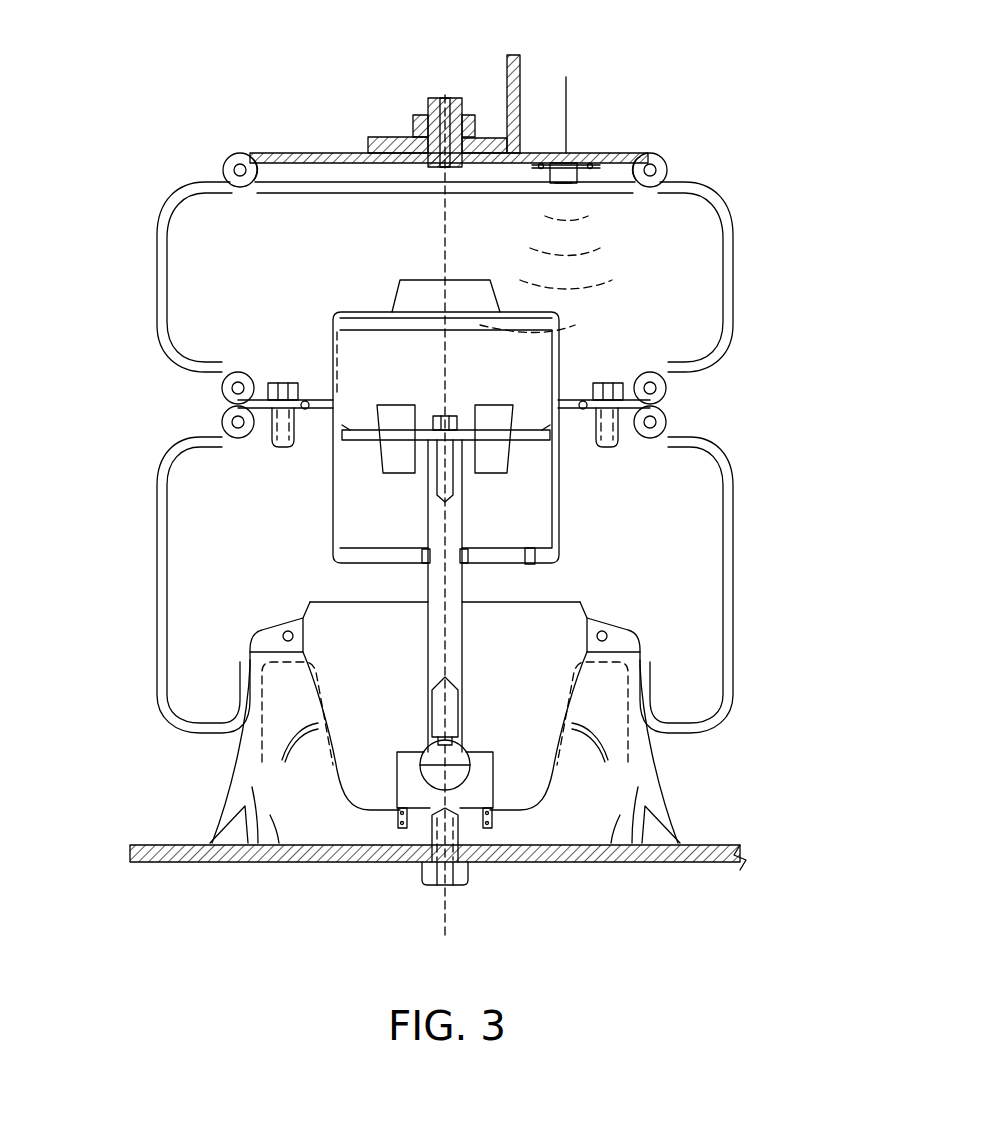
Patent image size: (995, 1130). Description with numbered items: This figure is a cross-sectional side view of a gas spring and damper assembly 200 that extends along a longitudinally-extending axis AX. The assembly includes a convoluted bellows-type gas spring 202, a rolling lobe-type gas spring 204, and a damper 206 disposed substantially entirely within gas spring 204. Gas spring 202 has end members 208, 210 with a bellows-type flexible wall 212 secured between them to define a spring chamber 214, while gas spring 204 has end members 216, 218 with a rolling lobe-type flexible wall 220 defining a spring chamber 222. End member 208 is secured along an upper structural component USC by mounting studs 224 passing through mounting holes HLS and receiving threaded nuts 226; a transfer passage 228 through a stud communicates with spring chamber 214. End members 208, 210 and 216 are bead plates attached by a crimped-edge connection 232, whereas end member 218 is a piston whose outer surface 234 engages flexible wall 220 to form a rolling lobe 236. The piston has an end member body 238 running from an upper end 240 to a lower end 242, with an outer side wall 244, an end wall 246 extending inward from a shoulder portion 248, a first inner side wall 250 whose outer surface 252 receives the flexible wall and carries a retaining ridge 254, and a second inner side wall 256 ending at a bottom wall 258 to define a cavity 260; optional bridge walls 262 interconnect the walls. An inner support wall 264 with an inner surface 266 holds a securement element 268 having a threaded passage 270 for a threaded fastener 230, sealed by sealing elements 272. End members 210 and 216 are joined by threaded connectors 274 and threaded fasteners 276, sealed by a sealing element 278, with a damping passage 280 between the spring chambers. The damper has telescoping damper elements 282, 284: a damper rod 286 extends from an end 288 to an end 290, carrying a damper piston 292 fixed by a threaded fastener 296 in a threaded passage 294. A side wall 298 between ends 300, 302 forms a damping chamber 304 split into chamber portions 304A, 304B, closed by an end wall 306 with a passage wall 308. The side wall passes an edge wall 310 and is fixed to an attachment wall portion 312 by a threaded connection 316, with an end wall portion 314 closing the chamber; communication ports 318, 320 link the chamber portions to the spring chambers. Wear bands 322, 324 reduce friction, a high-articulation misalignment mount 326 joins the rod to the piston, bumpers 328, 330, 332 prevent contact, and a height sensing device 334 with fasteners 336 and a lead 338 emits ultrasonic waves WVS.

The gas spring and damper assembly 200 is at (772, 150).
The gas spring 202 is at (740, 272).
The gas spring 204 is at (742, 540).
The damper 206 is at (665, 495).
The end member 208 is at (657, 153).
The end member 210 is at (670, 387).
The bellows-type flexible wall 212 is at (160, 298).
The spring chamber 214 is at (186, 248).
The end member 216 is at (670, 421).
The end member 218 is at (226, 778).
The rolling lobe-type flexible wall 220 is at (160, 580).
The spring chamber 222 is at (198, 613).
The mounting studs 224 is at (427, 104).
The threaded nuts 226 is at (412, 124).
The transfer passage 228 is at (447, 96).
The threaded fastener 230 is at (456, 873).
The crimped-edge connection 232 is at (226, 168).
The outer surface 234 is at (224, 831).
The rolling lobe 236 is at (197, 731).
The end member body 238 is at (662, 806).
The upper end 240 is at (690, 668).
The lower end 242 is at (686, 833).
The outer side wall 244 is at (258, 790).
The end wall 246 is at (688, 658).
The shoulder portion 248 is at (608, 652).
The first inner side wall 250 is at (577, 634).
The outer surface 252 is at (606, 626).
The retaining ridge 254 is at (584, 614).
The second inner side wall 256 is at (645, 735).
The bottom wall 258 is at (580, 858).
The cavity 260 is at (575, 775).
The bridge walls 262 is at (605, 692).
The inner support wall 264 is at (398, 835).
The inner surface 266 is at (472, 835).
The securement element 268 is at (482, 790).
The threaded passage 270 is at (468, 876).
The sealing elements 272 is at (398, 818).
The threaded connectors 274 is at (280, 447).
The threaded fasteners 276 is at (283, 382).
The sealing element 278 is at (305, 412).
The damping passage 280 is at (606, 390).
The damper element 282 is at (424, 520).
The damper element 284 is at (330, 508).
The damper rod 286 is at (428, 640).
The end 288 is at (490, 503).
The end 290 is at (466, 697).
The damper piston 292 is at (525, 441).
The threaded passage 294 is at (455, 478).
The threaded fastener 296 is at (438, 417).
The side wall 298 is at (335, 483).
The end 300 is at (320, 320).
The end 302 is at (330, 550).
The damping chamber 304 is at (412, 318).
The chamber portion 304A is at (517, 383).
The chamber portion 304B is at (500, 532).
The end wall 306 is at (356, 560).
The passage wall 308 is at (467, 562).
The edge wall 310 is at (600, 447).
The attachment wall portion 312 is at (338, 372).
The end wall portion 314 is at (476, 298).
The threaded connection 316 is at (568, 337).
The communication port 318 is at (360, 320).
The communication port 320 is at (537, 563).
The wear band 322 is at (352, 428).
The wear band 324 is at (427, 558).
The high-articulation misalignment mount 326 is at (420, 748).
The bumper 328 is at (434, 280).
The bumper 330 is at (488, 413).
The bumper 332 is at (396, 465).
The height sensing device 334 is at (594, 178).
The fasteners 336 is at (541, 170).
The lead 338 is at (568, 108).
The longitudinally-extending axis AX is at (445, 925).
The mounting holes HLS is at (415, 163).
The upper structural component USC is at (522, 62).
The ultrasonic waves WVS is at (598, 268).